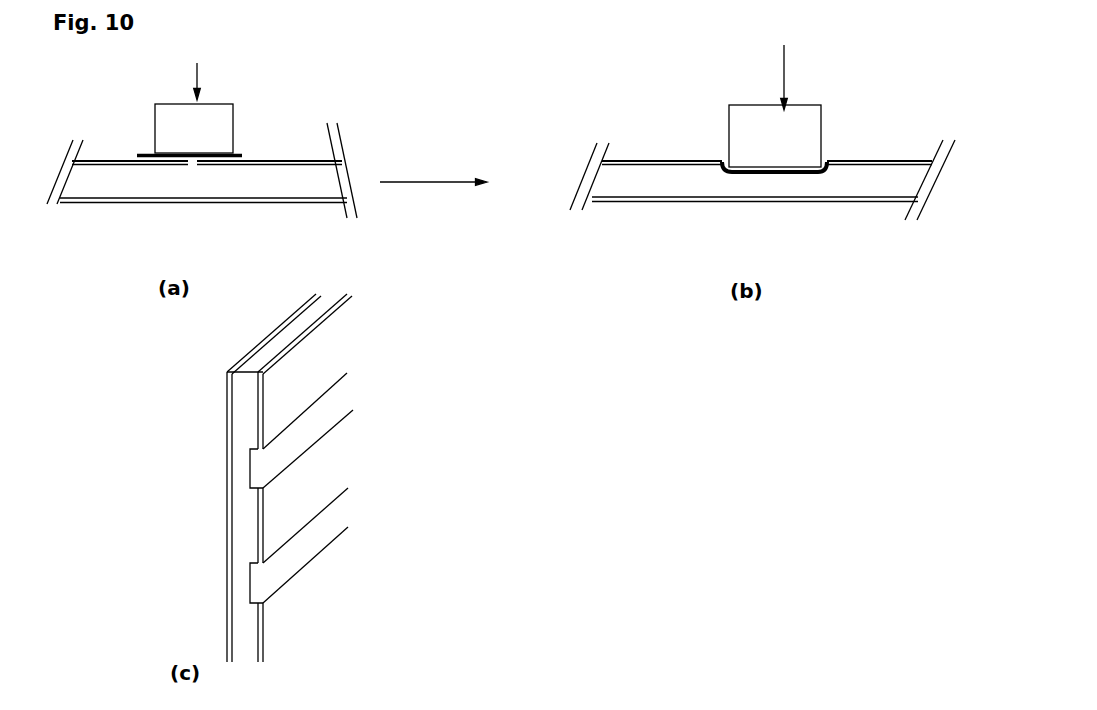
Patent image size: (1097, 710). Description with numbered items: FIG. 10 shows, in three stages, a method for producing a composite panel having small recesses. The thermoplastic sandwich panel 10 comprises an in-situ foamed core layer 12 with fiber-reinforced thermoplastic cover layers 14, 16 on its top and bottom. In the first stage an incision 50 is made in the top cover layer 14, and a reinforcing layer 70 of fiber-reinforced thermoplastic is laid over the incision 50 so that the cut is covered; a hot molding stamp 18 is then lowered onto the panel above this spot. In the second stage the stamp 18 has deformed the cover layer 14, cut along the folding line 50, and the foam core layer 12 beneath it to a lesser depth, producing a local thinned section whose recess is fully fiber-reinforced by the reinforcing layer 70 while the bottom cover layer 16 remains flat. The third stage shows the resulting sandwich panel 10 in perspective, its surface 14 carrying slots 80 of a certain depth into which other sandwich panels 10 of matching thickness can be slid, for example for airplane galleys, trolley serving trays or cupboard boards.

The thermoplastic sandwich panel 10 is at (350, 118).
The foam core layer 12 is at (92, 180).
The top cover layer 14 is at (90, 158).
The bottom cover layer 16 is at (133, 200).
The hot molding stamp 18 is at (218, 122).
The incision 50 is at (194, 168).
The reinforcing layer 70 is at (238, 153).
The slots 80 is at (307, 432).